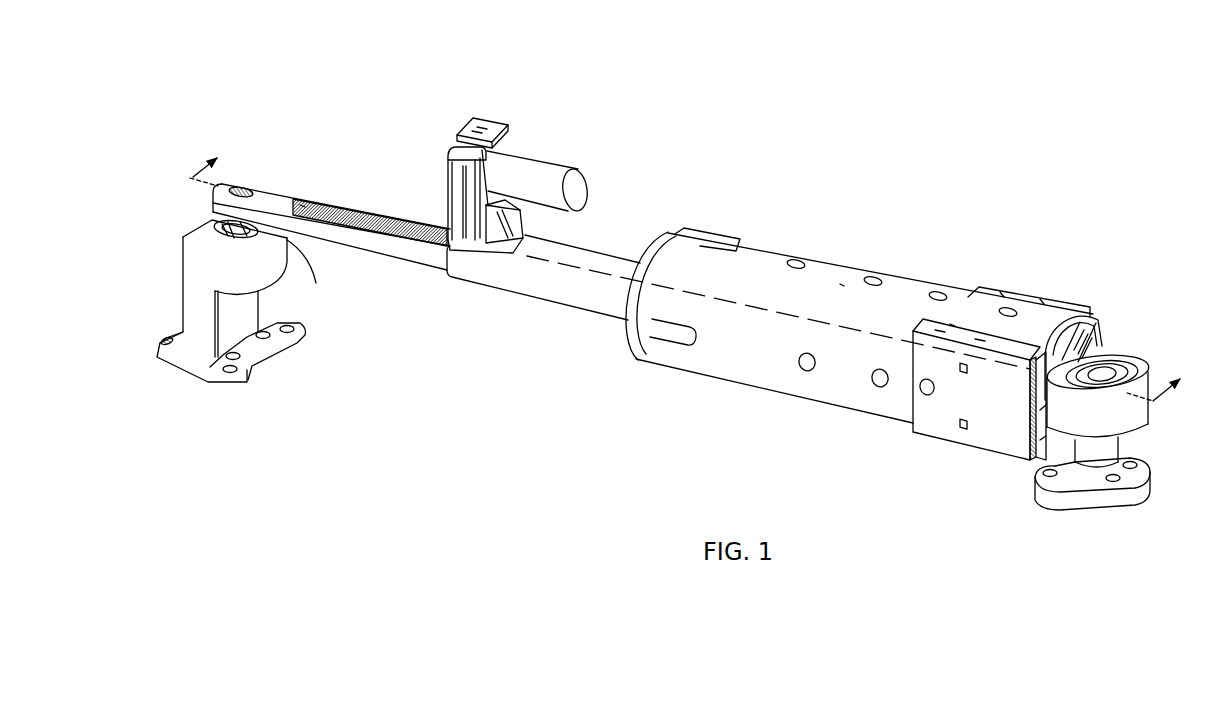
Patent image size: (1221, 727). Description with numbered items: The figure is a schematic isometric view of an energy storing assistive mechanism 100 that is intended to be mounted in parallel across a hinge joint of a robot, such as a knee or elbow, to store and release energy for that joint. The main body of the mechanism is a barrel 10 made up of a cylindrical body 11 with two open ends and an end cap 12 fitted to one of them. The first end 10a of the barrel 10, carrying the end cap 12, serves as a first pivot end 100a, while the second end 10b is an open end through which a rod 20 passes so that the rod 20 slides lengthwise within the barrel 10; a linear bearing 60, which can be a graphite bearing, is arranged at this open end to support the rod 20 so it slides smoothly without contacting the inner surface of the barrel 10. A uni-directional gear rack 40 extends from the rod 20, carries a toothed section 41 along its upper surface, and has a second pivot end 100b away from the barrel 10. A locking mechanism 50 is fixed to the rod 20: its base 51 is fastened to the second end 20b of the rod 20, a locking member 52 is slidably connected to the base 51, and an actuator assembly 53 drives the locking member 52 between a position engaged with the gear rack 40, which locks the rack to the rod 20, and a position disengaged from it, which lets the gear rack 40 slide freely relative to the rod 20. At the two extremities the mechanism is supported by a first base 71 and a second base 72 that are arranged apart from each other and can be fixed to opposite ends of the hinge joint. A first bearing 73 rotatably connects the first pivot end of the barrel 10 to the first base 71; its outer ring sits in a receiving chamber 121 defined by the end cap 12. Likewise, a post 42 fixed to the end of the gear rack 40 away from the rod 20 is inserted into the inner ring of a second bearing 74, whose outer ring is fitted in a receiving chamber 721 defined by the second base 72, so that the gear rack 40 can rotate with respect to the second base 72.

The energy storing assistive mechanism 100 is at (682, 61).
The second pivot end 100b is at (238, 177).
The first pivot end 100a is at (1009, 510).
The barrel 10 is at (810, 365).
The first end of the barrel 10a is at (1053, 405).
The second end of the barrel 10b is at (657, 305).
The cylindrical body 11 is at (842, 283).
The end cap 12 is at (1072, 346).
The receiving chamber 121 is at (1133, 360).
The rod 20 is at (372, 252).
The second end of the rod 20b is at (463, 271).
The uni-directional gear rack 40 is at (376, 255).
The threaded section 41 is at (368, 212).
The post 42 is at (213, 212).
The locking mechanism 50 is at (509, 170).
The base 51 is at (523, 228).
The locking member 52 is at (462, 190).
The actuator assembly 53 is at (571, 166).
The linear bearing 60 is at (654, 244).
The first base 71 is at (1105, 512).
The second base 72 is at (227, 311).
The receiving chamber 721 is at (183, 237).
The first bearing 73 is at (1122, 379).
The second bearing 74 is at (300, 268).